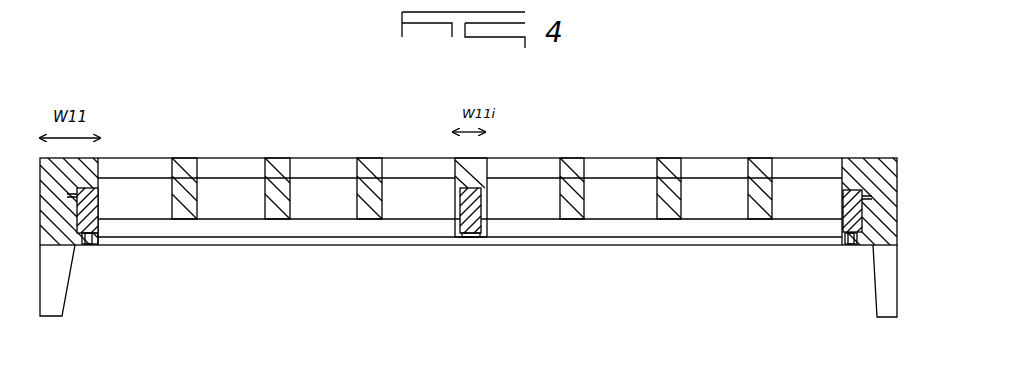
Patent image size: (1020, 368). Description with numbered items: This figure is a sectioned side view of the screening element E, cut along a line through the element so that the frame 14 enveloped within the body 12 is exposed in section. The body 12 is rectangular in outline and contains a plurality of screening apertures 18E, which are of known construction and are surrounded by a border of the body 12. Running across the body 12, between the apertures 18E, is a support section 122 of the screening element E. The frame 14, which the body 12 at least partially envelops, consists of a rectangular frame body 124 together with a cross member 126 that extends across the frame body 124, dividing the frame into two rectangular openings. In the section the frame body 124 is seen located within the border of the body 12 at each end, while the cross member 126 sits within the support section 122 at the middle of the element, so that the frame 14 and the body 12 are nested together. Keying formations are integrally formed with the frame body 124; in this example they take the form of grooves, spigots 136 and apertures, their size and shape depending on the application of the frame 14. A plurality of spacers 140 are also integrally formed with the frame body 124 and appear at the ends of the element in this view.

The body 12 is at (873, 158).
The frame 14 is at (867, 247).
The screening apertures 18E is at (323, 195).
The support section 122 is at (473, 167).
The frame body 124 is at (100, 208).
The cross member 126 is at (460, 227).
The spigots 136 is at (487, 192).
The spacers 140 is at (842, 240).
The screening element E is at (235, 122).